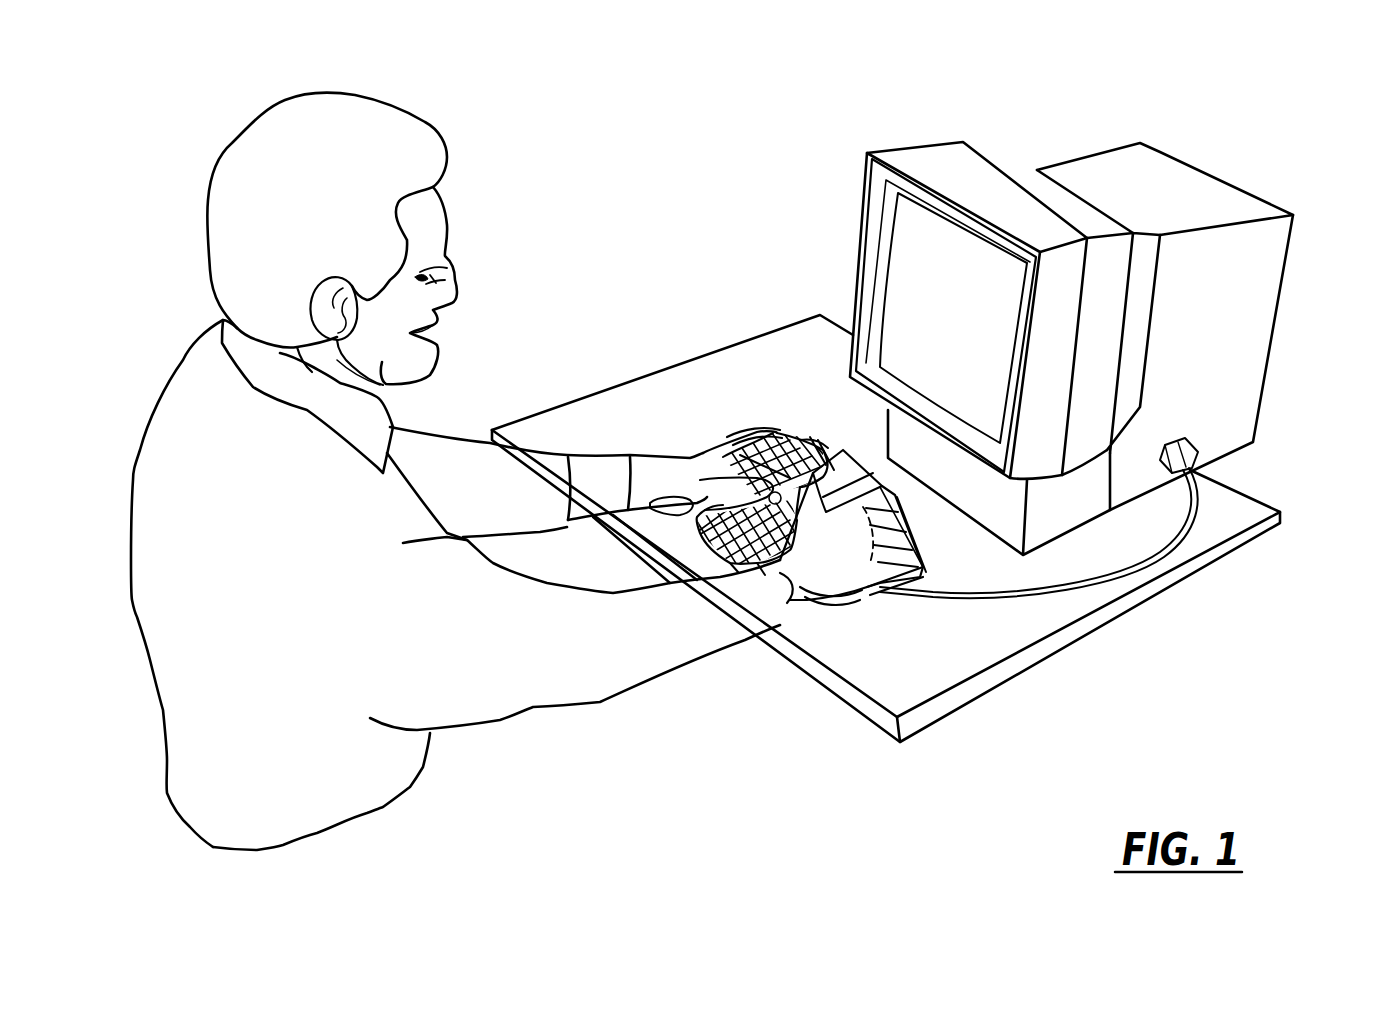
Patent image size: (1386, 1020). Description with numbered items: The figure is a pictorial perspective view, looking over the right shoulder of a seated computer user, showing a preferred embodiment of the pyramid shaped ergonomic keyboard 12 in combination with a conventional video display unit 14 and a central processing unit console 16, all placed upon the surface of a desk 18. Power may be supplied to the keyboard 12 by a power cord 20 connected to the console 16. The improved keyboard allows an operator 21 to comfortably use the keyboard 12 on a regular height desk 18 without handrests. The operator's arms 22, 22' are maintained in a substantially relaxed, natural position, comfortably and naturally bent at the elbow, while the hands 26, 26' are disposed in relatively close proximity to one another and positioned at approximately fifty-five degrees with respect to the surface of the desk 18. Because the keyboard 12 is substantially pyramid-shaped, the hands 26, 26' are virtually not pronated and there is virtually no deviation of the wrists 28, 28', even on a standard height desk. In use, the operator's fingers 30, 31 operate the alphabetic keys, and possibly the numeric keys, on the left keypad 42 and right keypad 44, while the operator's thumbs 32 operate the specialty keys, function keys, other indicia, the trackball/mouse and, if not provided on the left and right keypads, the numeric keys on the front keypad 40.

The pyramid shaped ergonomic keyboard 12 is at (924, 606).
The video display unit 14 is at (885, 148).
The central processing unit console 16 is at (1200, 170).
The desk 18 is at (1270, 492).
The power cord 20 is at (1190, 533).
The operator 21 is at (152, 175).
The arm 22 is at (548, 482).
The arm 22' is at (581, 633).
The hand 26 is at (757, 482).
The hand 26' is at (851, 525).
The wrist 28 is at (651, 457).
The wrist 28' is at (835, 622).
The finger 30 is at (753, 440).
The finger 31 is at (907, 520).
The thumb 32 is at (657, 537).
The front keypad 40 is at (733, 556).
The left keypad 42 is at (810, 437).
The right keypad 44 is at (877, 587).